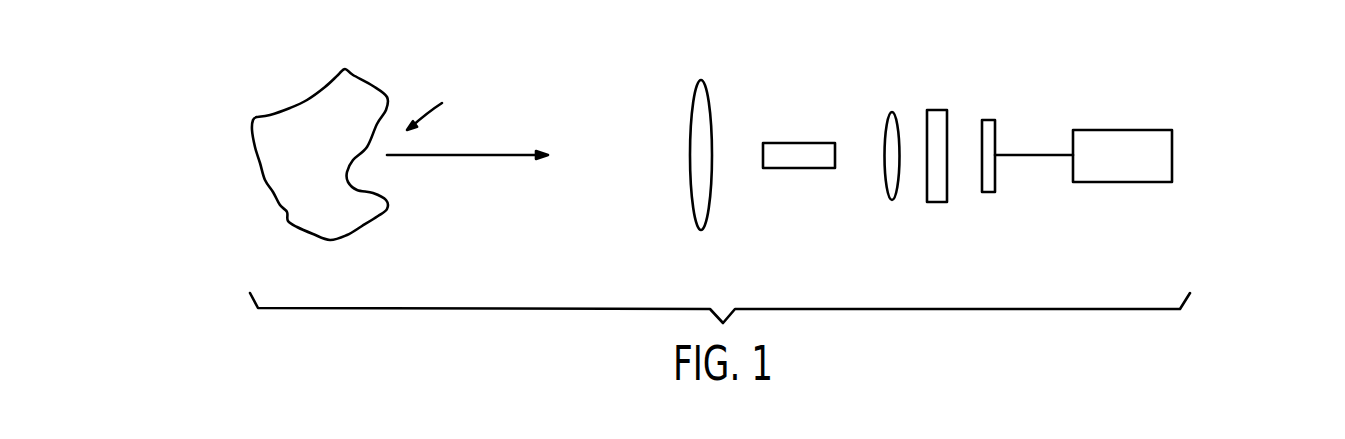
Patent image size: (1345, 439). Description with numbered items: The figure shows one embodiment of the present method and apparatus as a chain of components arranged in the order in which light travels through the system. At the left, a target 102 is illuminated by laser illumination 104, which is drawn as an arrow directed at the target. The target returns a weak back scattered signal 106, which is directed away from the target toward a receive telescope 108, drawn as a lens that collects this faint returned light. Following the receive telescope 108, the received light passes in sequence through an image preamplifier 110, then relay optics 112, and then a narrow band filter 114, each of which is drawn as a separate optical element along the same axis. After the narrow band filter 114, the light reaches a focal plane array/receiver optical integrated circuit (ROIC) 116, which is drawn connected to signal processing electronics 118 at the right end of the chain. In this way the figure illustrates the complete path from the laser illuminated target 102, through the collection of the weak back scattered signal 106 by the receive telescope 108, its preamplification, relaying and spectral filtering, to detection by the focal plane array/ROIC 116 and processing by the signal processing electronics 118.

The target 102 is at (280, 209).
The laser illumination 104 is at (444, 70).
The weak back scattered signal 106 is at (410, 156).
The receive telescope 108 is at (690, 150).
The image preamplifier 110 is at (795, 168).
The relay optics 112 is at (890, 200).
The narrow band filter 114 is at (933, 110).
The focal plane array/receiver optical integrated circuit (ROIC) 116 is at (988, 120).
The signal processing electronics 118 is at (1103, 182).